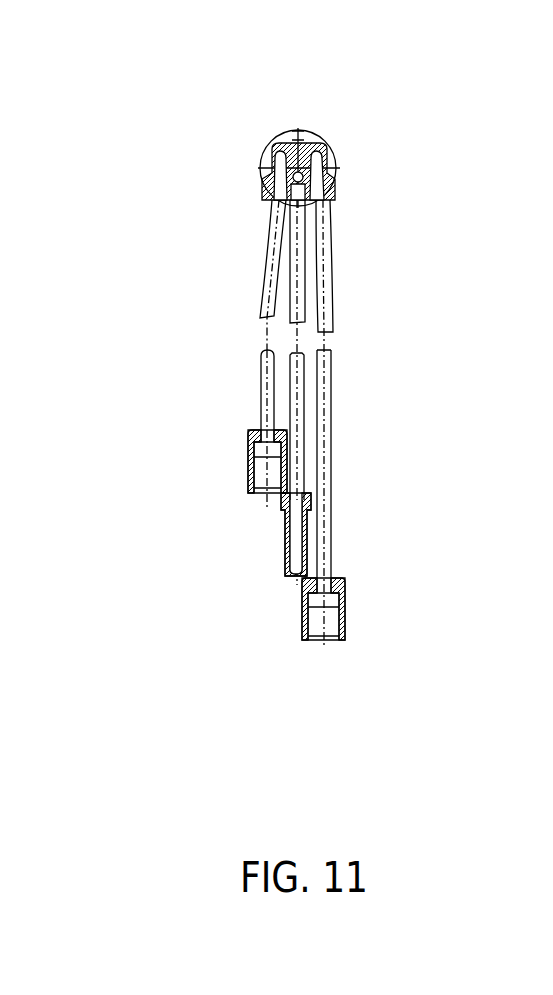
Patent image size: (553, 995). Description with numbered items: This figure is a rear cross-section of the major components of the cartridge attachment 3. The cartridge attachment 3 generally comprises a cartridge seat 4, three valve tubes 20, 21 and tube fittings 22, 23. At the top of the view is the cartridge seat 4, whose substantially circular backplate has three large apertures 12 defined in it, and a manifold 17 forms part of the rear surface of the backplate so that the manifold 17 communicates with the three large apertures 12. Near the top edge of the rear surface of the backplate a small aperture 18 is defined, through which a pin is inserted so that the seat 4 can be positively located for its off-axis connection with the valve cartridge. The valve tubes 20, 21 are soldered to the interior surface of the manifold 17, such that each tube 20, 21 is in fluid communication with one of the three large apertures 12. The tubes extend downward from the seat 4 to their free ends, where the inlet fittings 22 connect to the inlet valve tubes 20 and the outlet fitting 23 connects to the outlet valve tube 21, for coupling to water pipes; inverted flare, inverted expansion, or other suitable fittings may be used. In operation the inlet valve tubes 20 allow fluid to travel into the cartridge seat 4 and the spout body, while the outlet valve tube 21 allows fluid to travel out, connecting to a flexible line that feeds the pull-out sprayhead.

The cartridge attachment 3 is at (291, 375).
The cartridge seat 4 is at (286, 120).
The large apertures 12 is at (280, 160).
The manifold 17 is at (286, 116).
The small aperture 18 is at (298, 130).
The inlet valve tube 20 is at (262, 392).
The outlet valve tube 21 is at (292, 375).
The inlet fitting 22 is at (255, 480).
The outlet fitting 23 is at (290, 558).